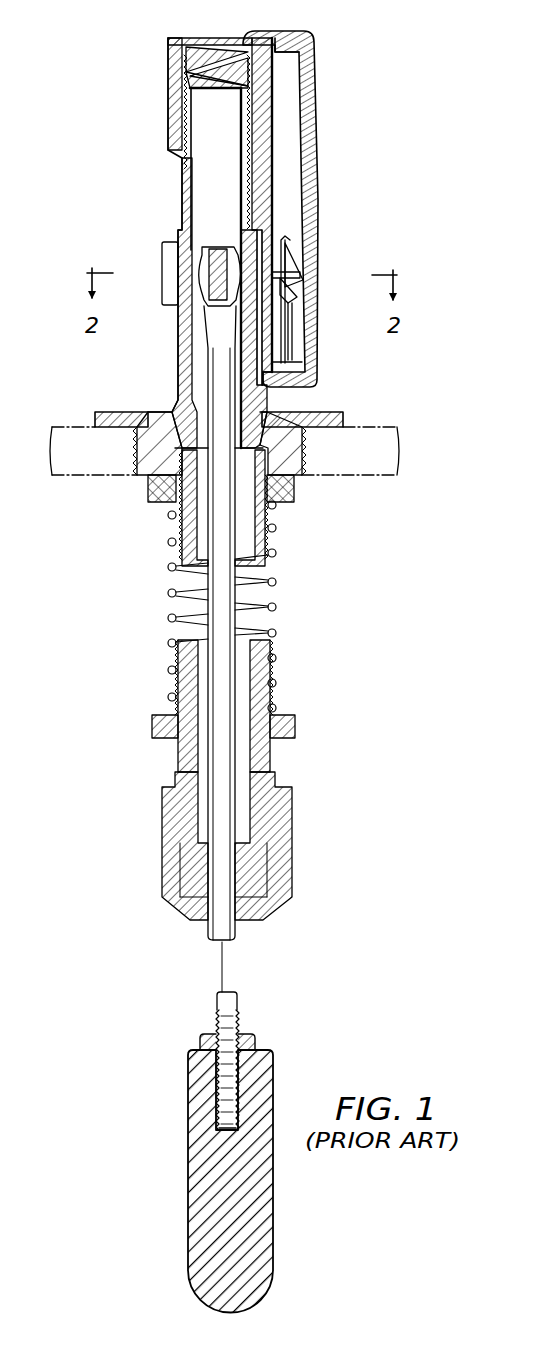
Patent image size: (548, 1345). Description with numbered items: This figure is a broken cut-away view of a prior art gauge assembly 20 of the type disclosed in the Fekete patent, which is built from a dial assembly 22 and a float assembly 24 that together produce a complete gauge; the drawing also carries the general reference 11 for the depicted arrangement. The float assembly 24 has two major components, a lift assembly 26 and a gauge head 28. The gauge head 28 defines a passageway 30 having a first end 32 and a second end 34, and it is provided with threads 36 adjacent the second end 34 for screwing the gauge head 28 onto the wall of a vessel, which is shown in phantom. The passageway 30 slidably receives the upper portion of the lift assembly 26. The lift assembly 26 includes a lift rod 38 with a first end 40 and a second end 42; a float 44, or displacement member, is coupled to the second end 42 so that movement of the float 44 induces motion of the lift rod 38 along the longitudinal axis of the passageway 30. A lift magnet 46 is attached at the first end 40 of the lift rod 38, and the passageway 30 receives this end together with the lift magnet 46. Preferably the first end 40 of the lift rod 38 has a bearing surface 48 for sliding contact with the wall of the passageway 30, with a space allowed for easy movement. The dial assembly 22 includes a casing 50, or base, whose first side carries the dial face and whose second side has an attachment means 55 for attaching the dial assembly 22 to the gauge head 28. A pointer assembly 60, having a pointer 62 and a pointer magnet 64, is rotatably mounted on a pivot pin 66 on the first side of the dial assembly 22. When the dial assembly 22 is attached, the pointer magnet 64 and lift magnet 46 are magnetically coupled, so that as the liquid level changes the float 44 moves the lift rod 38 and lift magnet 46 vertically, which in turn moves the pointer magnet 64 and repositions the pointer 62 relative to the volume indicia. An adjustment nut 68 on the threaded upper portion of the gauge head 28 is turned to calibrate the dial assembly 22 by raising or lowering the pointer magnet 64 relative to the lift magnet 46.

The liquid level sensor assembly 11 is at (125, 183).
The gauge assembly 20 is at (332, 138).
The dial assembly 22 is at (262, 33).
The float assembly 24 is at (340, 797).
The lift assembly 26 is at (205, 746).
The gauge head 28 is at (322, 413).
The passageway 30 is at (180, 413).
The first end 32 is at (228, 137).
The second end 34 is at (152, 488).
The threads 36 is at (310, 450).
The lift rod 38 is at (270, 612).
The first end 40 is at (215, 356).
The second end 42 is at (238, 997).
The float 44 is at (276, 1192).
The lift magnet 46 is at (214, 247).
The bearing surface 48 is at (197, 258).
The casing 50 is at (313, 50).
The attachment means 55 is at (172, 62).
The pointer assembly 60 is at (318, 236).
The pointer 62 is at (300, 343).
The pointer magnet 64 is at (297, 297).
The pivot pin 66 is at (303, 278).
The adjustment nut 68 is at (172, 110).